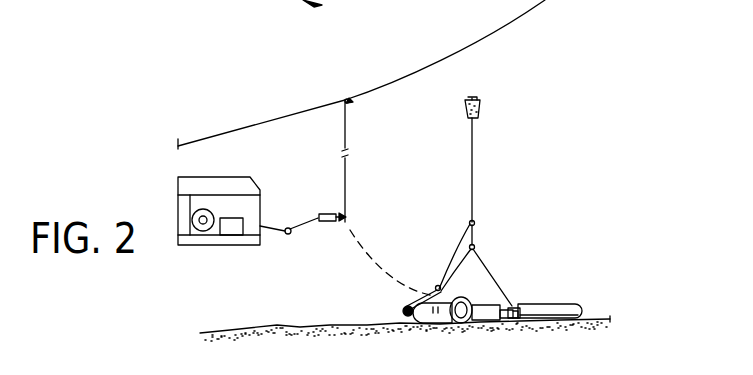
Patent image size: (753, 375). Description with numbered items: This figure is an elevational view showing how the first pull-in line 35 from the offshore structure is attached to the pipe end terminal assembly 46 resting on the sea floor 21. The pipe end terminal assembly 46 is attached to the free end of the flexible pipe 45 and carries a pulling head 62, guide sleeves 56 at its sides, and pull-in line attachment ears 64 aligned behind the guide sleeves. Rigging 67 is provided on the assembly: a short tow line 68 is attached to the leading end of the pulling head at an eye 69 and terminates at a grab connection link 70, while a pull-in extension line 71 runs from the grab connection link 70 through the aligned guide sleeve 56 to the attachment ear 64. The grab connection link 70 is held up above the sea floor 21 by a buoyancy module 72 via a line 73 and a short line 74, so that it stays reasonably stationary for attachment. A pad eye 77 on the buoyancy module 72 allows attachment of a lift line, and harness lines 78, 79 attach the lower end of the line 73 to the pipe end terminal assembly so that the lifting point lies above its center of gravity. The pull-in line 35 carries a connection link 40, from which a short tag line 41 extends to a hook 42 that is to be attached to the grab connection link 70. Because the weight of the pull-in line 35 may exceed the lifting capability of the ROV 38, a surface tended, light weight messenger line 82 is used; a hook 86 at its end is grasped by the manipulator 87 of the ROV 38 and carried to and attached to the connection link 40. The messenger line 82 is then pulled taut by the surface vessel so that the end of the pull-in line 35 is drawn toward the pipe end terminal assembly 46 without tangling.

The sea floor 21 is at (268, 326).
The pull-in line 35 is at (258, 123).
The ROV 38 is at (202, 247).
The connection link 40 is at (345, 101).
The tag line 41 is at (345, 141).
The hook 42 is at (347, 224).
The flexible pipe 45 is at (571, 304).
The pipe end terminal assembly 46 is at (403, 298).
The guide sleeve 56 is at (485, 325).
The pulling head 62 is at (413, 325).
The pull-in line attachment ear 64 is at (517, 320).
The rigging 67 is at (503, 238).
The tow line 68 is at (456, 280).
The eye 69 is at (405, 312).
The grab connection link 70 is at (436, 288).
The pull-in extension line 71 is at (455, 325).
The buoyancy module 72 is at (483, 112).
The line 73 is at (472, 160).
The short line 74 is at (469, 232).
The pad eye 77 is at (473, 98).
The harness line 78 is at (444, 285).
The harness line 79 is at (486, 266).
The messenger line 82 is at (482, 40).
The hook 86 is at (354, 101).
The manipulator 87 is at (277, 224).